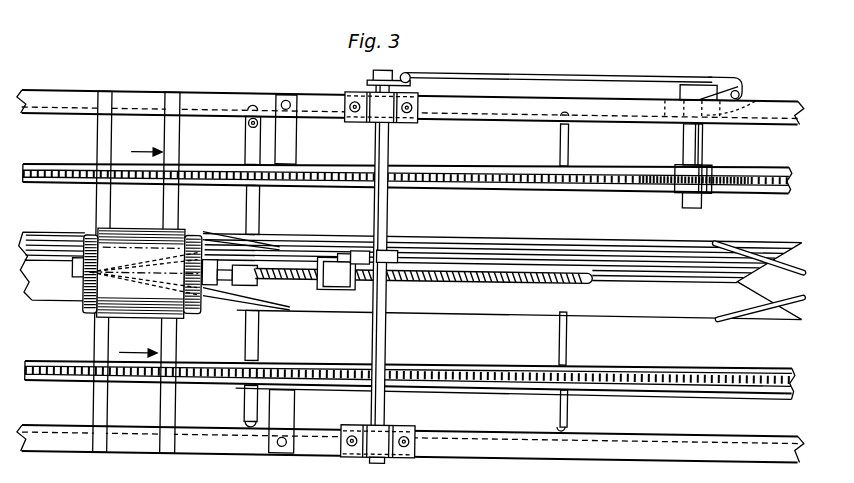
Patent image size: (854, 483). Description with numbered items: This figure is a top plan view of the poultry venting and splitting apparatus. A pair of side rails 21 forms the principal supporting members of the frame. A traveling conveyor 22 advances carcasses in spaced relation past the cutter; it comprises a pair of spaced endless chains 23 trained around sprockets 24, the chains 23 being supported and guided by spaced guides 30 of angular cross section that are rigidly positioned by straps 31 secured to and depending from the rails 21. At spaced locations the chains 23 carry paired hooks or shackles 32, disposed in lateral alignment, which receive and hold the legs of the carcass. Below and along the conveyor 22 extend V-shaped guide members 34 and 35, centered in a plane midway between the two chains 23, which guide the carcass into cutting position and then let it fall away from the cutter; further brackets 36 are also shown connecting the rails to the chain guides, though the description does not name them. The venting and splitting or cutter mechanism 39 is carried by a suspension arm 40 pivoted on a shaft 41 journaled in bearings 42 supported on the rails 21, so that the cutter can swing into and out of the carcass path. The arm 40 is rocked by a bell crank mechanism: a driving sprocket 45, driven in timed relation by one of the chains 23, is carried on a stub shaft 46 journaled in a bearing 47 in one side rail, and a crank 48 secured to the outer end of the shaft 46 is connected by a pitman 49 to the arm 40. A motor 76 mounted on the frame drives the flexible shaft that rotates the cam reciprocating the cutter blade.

The side rails 21 is at (92, 64).
The traveling conveyor 22 is at (141, 384).
The endless chains 23 is at (80, 137).
The sprockets 24 is at (443, 266).
The guides 30 is at (643, 154).
The straps 31 is at (300, 124).
The hooks or shackles 32 is at (222, 172).
The guide member 34 is at (64, 244).
The guide member 35 is at (647, 211).
The vertical bracket 36 is at (569, 144).
The venting and splitting or cutter mechanism 39 is at (341, 287).
The suspension arm 40 is at (377, 244).
The shaft 41 is at (389, 343).
The bearings 42 is at (365, 455).
The driving sprocket 45 is at (716, 182).
The stub shaft 46 is at (701, 143).
The bearing 47 is at (775, 87).
The crank 48 is at (710, 76).
The pitman 49 is at (593, 68).
The motor 76 is at (90, 314).